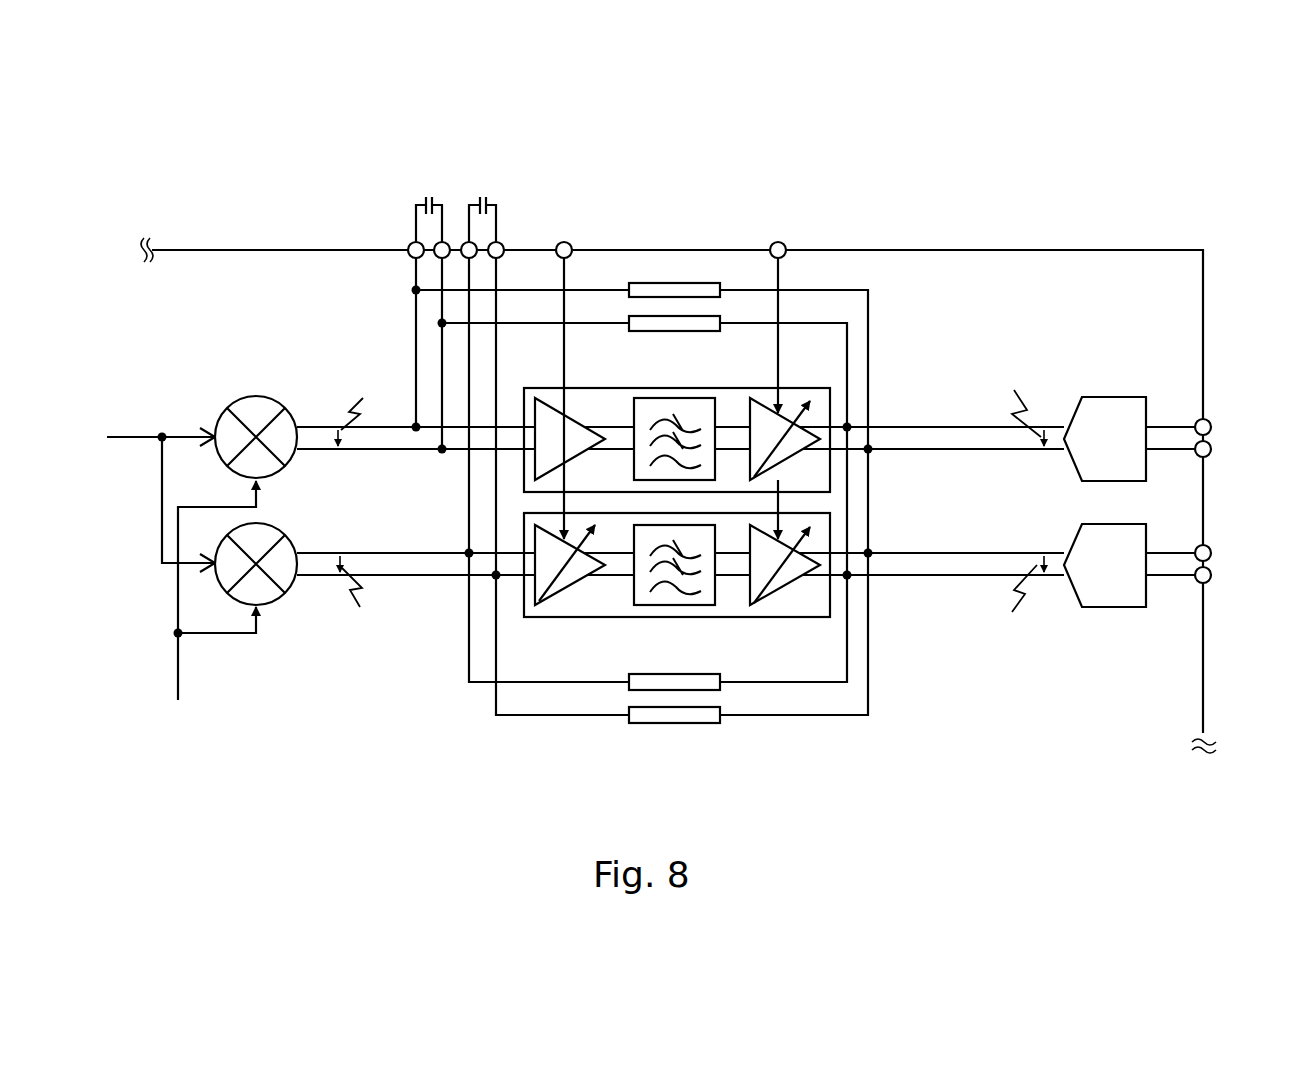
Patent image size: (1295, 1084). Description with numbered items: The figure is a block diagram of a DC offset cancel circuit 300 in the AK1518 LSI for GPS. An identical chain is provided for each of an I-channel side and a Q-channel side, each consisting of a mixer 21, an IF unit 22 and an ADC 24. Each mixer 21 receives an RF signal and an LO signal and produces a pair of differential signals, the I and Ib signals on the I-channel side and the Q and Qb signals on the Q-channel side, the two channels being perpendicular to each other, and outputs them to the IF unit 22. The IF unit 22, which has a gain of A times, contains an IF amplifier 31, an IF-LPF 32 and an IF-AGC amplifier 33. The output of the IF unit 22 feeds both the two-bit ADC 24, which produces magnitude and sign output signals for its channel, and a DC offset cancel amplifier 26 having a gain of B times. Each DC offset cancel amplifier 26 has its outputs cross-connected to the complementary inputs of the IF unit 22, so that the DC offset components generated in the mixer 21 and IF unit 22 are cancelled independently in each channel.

The DC offset cancel circuit 300 is at (701, 90).
The mixer 21 is at (257, 396).
The IF unit 22 is at (606, 388).
The ADC 24 is at (1113, 397).
The DC offset cancel amplifier 26 is at (674, 283).
The IF amplifier 31 is at (549, 392).
The IF-LPF 32 is at (666, 398).
The IF-AGC amplifier 33 is at (797, 457).